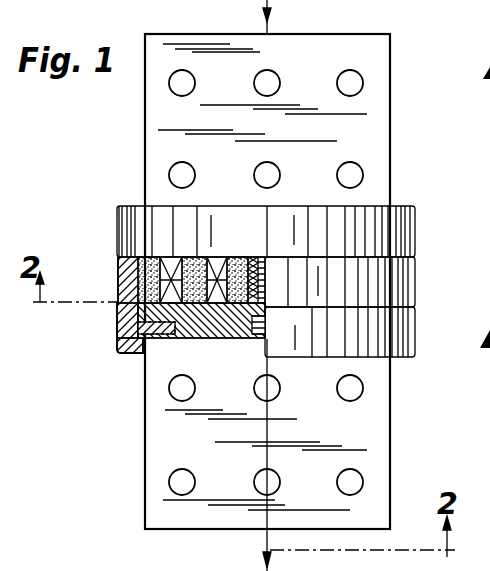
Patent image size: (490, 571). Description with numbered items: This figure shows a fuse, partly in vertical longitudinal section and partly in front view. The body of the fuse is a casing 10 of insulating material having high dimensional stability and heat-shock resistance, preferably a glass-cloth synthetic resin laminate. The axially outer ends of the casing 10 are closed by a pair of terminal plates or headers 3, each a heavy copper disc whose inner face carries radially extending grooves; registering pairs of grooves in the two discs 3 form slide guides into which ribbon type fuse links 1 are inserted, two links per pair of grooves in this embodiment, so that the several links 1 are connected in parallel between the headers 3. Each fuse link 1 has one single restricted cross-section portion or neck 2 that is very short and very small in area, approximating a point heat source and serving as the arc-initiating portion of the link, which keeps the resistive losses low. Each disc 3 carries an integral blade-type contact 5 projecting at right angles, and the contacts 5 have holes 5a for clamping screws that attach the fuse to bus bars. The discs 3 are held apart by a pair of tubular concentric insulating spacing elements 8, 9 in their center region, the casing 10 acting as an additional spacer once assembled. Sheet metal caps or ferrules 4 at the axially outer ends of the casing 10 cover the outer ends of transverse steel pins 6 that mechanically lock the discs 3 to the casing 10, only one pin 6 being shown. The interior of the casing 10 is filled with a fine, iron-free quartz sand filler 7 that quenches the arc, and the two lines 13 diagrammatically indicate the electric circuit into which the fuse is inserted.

The fuse link 1 is at (170, 268).
The neck 2 is at (140, 342).
The terminal plate 3 is at (247, 340).
The cap 4 is at (395, 240).
The blade-type contact 5 is at (375, 97).
The hole 5a is at (341, 71).
The transverse steel pin 6 is at (118, 325).
The quartz sand filler 7 is at (118, 262).
The tubular spacing element 8 is at (233, 262).
The tubular spacing element 9 is at (262, 268).
The casing 10 is at (117, 272).
The circuit line 13 is at (270, 23).